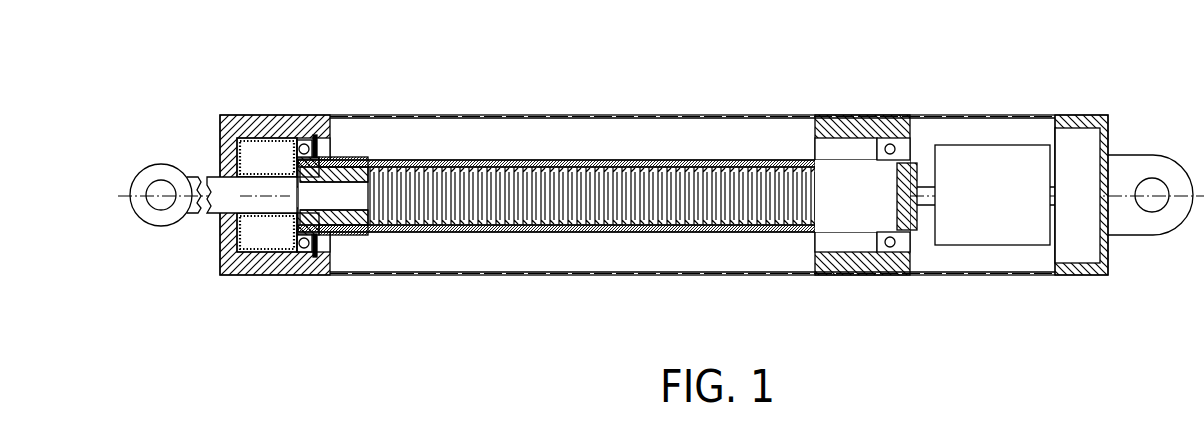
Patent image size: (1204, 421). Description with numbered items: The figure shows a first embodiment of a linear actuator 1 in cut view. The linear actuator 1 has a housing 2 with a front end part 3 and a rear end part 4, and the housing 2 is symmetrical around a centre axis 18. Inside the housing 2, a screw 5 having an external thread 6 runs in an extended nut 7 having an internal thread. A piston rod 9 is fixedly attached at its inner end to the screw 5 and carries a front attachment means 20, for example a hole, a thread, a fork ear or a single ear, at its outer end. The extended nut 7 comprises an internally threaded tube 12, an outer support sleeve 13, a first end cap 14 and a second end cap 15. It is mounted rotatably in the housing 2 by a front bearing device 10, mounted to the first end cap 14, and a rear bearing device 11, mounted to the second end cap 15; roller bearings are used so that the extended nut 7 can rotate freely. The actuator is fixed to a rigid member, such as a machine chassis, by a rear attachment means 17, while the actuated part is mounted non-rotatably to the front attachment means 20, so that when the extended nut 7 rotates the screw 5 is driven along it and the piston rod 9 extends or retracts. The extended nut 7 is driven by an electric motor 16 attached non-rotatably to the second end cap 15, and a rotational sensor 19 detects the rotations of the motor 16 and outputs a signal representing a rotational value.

The linear actuator 1 is at (877, 92).
The housing 2 is at (652, 276).
The front end part 3 is at (243, 266).
The rear end part 4 is at (1088, 272).
The screw 5 is at (363, 236).
The external thread 6 is at (334, 235).
The extended nut 7 is at (531, 233).
The piston rod 9 is at (213, 177).
The front bearing device 10 is at (310, 256).
The rear bearing device 11 is at (893, 274).
The internally threaded tube 12 is at (568, 166).
The outer support sleeve 13 is at (483, 159).
The first end cap 14 is at (325, 157).
The second end cap 15 is at (850, 242).
The electric motor 16 is at (1003, 242).
The rear attachment means 17 is at (1147, 166).
The centre axis 18 is at (1196, 178).
The rotational sensor 19 is at (1069, 248).
The front attachment means 20 is at (157, 222).